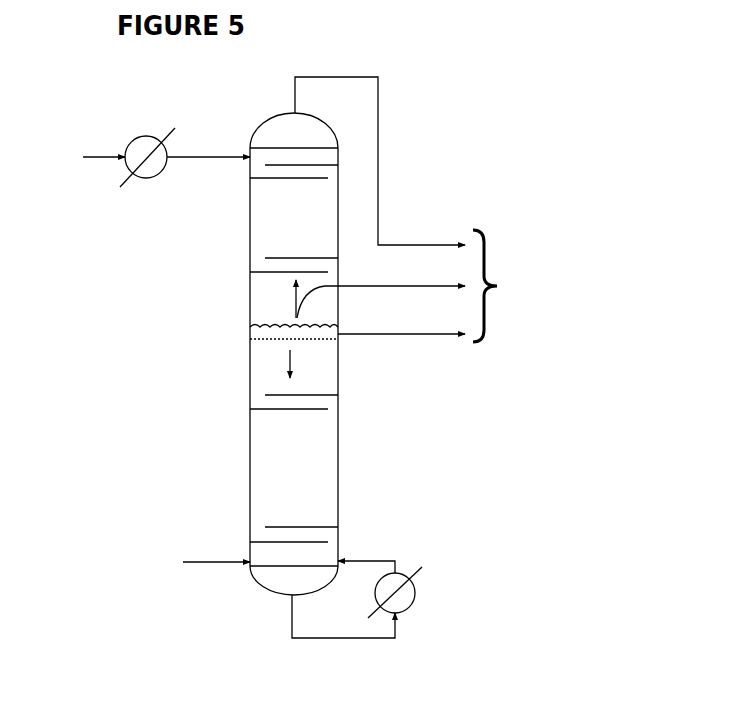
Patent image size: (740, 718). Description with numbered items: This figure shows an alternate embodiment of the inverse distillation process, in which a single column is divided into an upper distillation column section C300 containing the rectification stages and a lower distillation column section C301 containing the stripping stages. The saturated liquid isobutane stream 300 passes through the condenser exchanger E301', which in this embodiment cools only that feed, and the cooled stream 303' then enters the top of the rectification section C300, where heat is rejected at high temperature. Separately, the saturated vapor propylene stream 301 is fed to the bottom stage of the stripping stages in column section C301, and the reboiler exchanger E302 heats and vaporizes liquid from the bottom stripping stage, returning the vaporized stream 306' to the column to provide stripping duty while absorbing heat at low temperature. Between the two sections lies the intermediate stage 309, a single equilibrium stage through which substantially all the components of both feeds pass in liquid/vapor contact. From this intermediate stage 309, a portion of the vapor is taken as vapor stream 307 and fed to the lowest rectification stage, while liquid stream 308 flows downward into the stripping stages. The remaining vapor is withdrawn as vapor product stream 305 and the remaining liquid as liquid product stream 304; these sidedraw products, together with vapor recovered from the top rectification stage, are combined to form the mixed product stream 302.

The saturated liquid isobutane stream 300 is at (78, 161).
The condenser exchanger E301' is at (150, 145).
The cooled feed stream 303' is at (208, 176).
The distillation column section C300 is at (294, 236).
The vapor stream 307 is at (292, 291).
The vapor product stream 305 is at (401, 275).
The liquid product stream 304 is at (401, 350).
The mixed product stream 302 is at (513, 286).
The intermediate stage 309 is at (267, 341).
The liquid stream 308 is at (295, 381).
The distillation column section C301 is at (294, 477).
The saturated vapor propylene stream 301 is at (191, 563).
The vaporized stream from reboiler 306' is at (378, 553).
The reboiler exchanger E302 is at (391, 602).